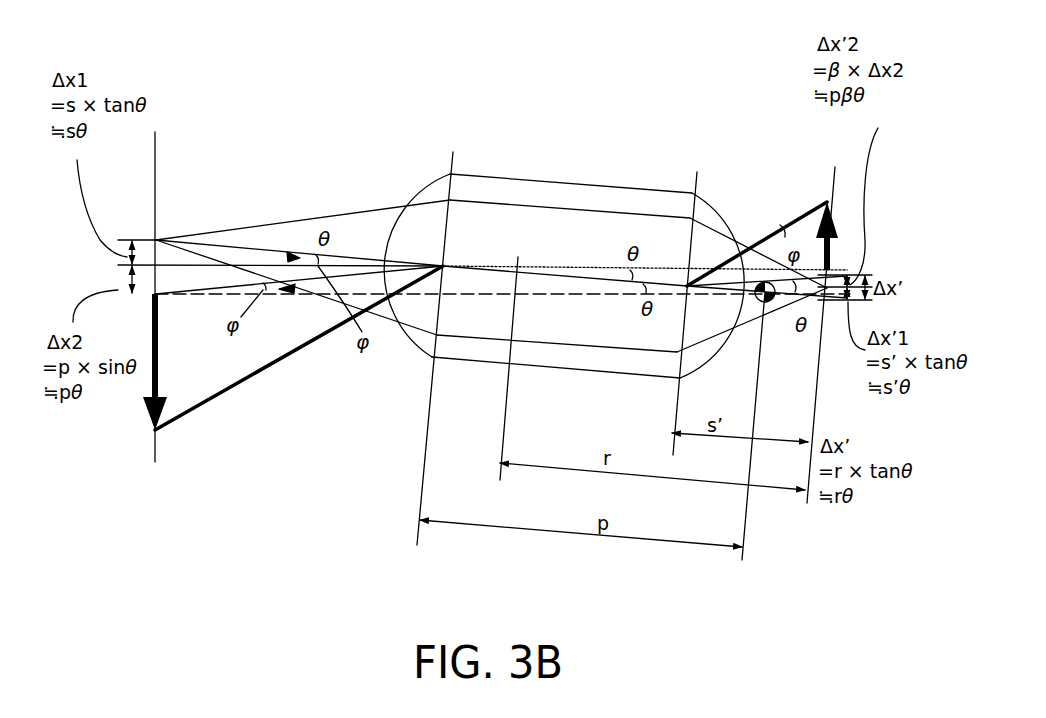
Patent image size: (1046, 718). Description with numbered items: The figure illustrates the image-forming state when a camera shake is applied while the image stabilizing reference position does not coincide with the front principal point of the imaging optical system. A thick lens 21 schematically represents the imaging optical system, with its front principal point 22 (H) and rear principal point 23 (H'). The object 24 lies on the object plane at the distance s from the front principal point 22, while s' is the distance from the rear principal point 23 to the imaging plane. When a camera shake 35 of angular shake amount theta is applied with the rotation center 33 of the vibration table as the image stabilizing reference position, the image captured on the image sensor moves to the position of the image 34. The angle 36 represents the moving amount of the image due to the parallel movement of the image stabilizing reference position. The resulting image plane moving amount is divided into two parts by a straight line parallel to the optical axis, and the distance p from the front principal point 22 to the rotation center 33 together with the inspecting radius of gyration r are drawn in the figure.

The thick lens 21 is at (560, 183).
The front principal point 22 is at (467, 122).
The rear principal point 23 is at (708, 122).
The object 24 is at (152, 374).
The rotation center 33 is at (770, 306).
The image 34 is at (822, 252).
The camera shake 35 is at (288, 255).
The angle 36 is at (300, 289).